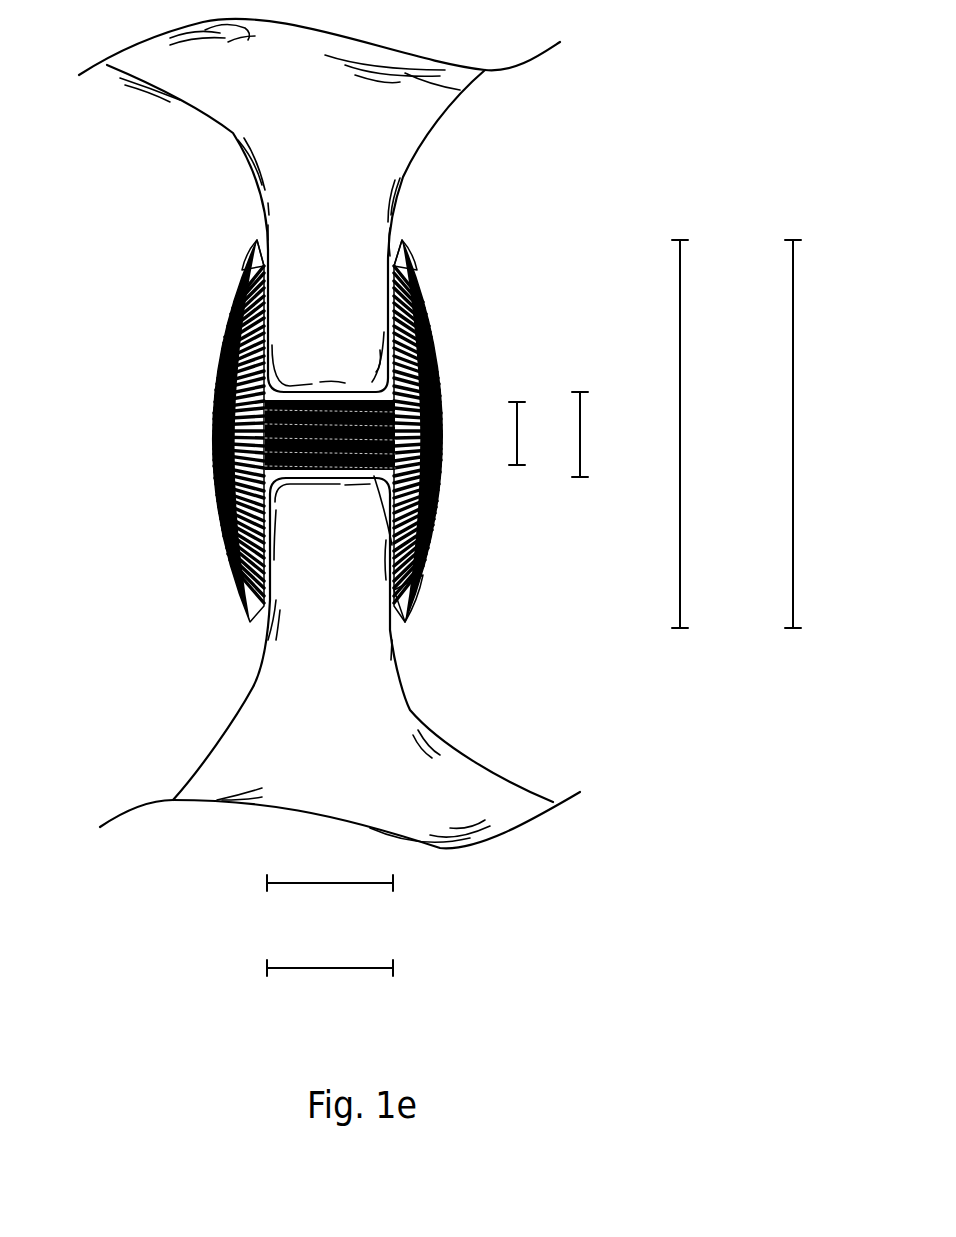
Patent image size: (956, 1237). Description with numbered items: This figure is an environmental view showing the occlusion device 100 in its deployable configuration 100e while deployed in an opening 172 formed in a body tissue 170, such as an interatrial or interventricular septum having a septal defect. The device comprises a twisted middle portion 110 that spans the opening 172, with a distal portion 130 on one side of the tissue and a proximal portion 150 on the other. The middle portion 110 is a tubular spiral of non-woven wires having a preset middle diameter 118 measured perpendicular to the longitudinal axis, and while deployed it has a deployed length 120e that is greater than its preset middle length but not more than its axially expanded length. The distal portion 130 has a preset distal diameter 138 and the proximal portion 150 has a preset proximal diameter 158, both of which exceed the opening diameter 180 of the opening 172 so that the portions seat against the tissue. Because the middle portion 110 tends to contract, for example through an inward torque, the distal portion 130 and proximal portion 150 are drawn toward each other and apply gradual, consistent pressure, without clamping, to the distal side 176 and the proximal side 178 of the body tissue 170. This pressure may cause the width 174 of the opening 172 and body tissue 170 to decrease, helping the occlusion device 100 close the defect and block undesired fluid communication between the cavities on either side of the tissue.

The occlusion device 100 is at (319, 422).
The deployable configuration 100e is at (257, 638).
The middle portion 110 is at (217, 372).
The preset middle diameter 118 is at (537, 433).
The deployed length 120e is at (330, 897).
The distal portion 130 is at (221, 349).
The preset distal diameter 138 is at (703, 434).
The proximal portion 150 is at (437, 347).
The preset proximal diameter 158 is at (816, 434).
The body tissue 170 is at (253, 688).
The opening 172 is at (422, 588).
The width 174 is at (330, 982).
The distal side 176 is at (242, 251).
The proximal side 178 is at (414, 254).
The opening diameter 180 is at (600, 434).